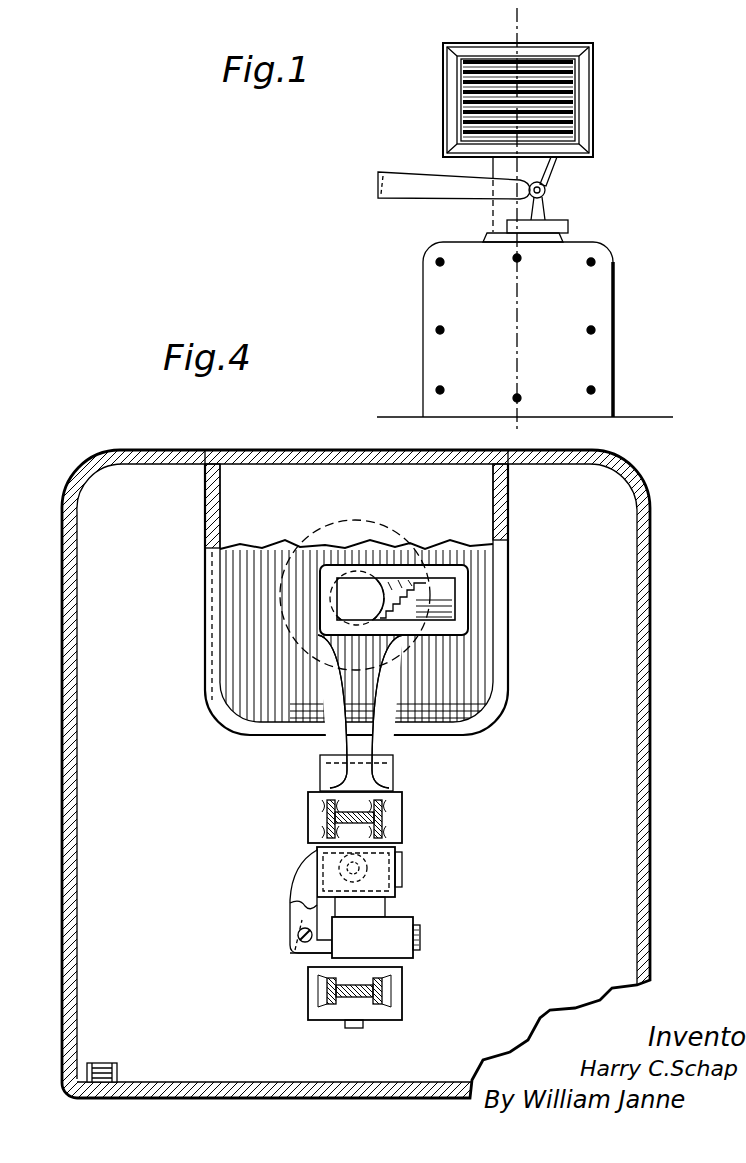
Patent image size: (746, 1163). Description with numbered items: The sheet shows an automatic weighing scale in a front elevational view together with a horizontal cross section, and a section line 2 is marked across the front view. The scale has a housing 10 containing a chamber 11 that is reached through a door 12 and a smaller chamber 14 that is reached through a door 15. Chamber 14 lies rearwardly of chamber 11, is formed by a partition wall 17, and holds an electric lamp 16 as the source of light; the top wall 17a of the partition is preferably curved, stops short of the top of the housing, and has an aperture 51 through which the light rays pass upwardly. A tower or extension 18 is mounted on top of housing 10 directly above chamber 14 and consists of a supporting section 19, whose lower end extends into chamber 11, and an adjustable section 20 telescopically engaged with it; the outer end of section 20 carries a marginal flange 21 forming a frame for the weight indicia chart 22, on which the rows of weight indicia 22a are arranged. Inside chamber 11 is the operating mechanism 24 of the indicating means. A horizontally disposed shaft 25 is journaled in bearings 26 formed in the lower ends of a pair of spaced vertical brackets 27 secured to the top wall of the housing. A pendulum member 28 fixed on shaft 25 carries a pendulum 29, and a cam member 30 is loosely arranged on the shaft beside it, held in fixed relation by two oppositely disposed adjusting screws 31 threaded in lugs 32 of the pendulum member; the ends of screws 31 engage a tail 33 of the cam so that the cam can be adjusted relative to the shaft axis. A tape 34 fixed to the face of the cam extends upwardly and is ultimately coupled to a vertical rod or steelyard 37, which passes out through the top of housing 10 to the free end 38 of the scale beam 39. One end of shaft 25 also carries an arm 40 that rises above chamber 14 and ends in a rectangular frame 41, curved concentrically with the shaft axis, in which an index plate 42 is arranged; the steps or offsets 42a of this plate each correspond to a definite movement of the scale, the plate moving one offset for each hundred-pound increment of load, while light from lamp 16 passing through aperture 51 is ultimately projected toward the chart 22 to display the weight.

In FIG. 1, the section line 2- 2 is at (517, 225).
In FIG. 1, the housing 10 is at (614, 296).
In FIG. 4, the chamber 11 is at (100, 822).
In FIG. 1, the door 12 is at (452, 300).
In FIG. 4, the door 12 is at (184, 1084).
In FIG. 4, the smaller chamber 14 is at (256, 480).
In FIG. 4, the door 15 is at (303, 456).
In FIG. 4, the electric lamp 16 is at (370, 526).
In FIG. 4, the partition wall 17 is at (207, 532).
In FIG. 4, the top wall 17a is at (244, 657).
In FIG. 1, the tower or extension 18 is at (556, 170).
In FIG. 1, the supporting section 19 is at (492, 165).
In FIG. 1, the adjustable section 20 is at (598, 84).
In FIG. 1, the marginal flange 21 is at (563, 50).
In FIG. 1, the weight indicia chart 22 is at (477, 65).
In FIG. 1, the louvers 22a is at (461, 131).
In FIG. 4, the operating mechanism 24 is at (365, 916).
In FIG. 4, the shaft 25 is at (352, 1030).
In FIG. 4, the bearings 26 is at (394, 815).
In FIG. 4, the brackets 27 is at (332, 818).
In FIG. 4, the pendulum member 28 is at (398, 862).
In FIG. 4, the pendulum 29 is at (401, 882).
In FIG. 4, the cam member 30 is at (372, 927).
In FIG. 4, the adjusting screws 31 is at (298, 935).
In FIG. 4, the ears or lugs 32 is at (302, 913).
In FIG. 4, the tail or extension 33 is at (292, 955).
In FIG. 4, the tape or flexible member 34 is at (421, 938).
In FIG. 1, the rod or steelyard 37 is at (533, 207).
In FIG. 1, the free end 38 is at (547, 186).
In FIG. 1, the beam 39 is at (376, 190).
In FIG. 4, the arm 40 is at (347, 745).
In FIG. 4, the rectangular frame 41 is at (468, 630).
In FIG. 4, the index plate 42 is at (457, 602).
In FIG. 4, the window opening 42a is at (415, 577).
In FIG. 4, the aperture 51 is at (340, 603).